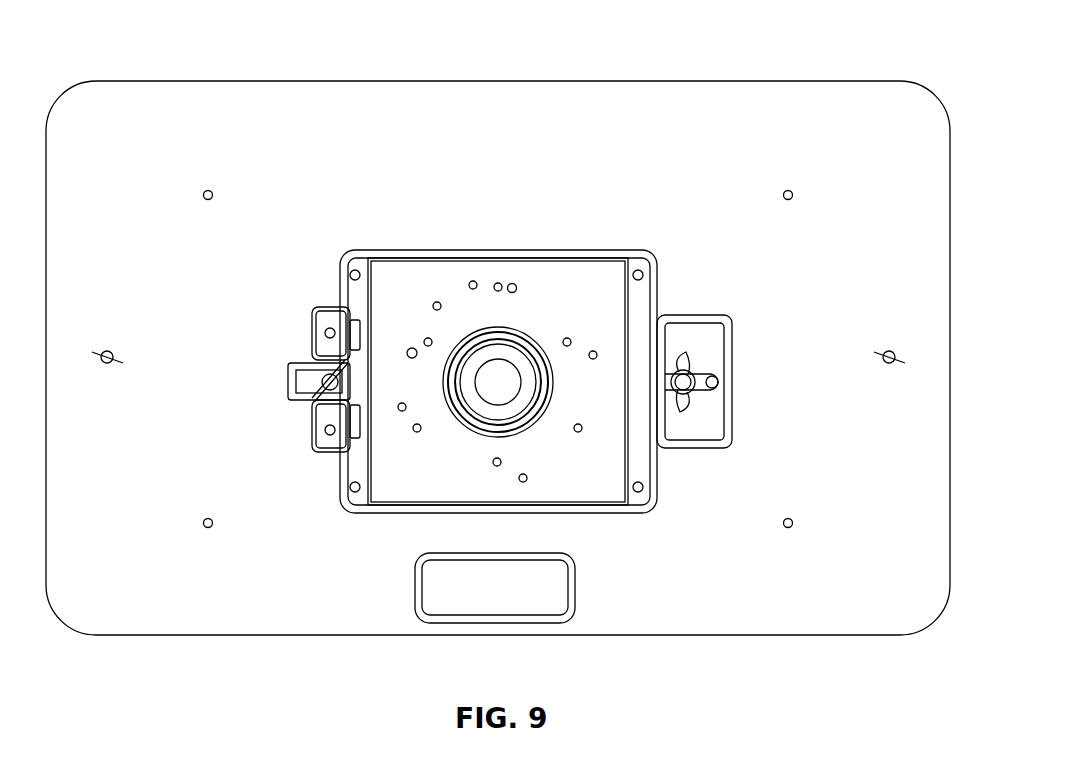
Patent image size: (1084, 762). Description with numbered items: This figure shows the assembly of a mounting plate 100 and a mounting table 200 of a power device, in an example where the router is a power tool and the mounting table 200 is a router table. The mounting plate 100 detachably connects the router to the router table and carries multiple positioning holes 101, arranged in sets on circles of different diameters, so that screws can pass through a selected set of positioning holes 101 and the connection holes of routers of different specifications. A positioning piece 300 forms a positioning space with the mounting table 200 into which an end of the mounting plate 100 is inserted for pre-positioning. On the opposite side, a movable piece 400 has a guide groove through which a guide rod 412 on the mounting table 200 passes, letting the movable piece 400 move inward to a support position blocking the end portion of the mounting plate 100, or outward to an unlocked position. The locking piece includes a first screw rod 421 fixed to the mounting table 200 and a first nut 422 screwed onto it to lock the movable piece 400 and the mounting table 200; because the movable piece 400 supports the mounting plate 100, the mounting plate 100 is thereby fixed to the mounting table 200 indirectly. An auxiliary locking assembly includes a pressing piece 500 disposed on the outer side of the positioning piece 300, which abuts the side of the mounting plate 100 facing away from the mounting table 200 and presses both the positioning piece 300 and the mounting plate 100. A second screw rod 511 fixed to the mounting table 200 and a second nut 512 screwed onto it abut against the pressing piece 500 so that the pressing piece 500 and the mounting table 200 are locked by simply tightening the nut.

The mounting table 200 is at (503, 317).
The mounting plate 100 is at (519, 330).
The positioning hole 101 is at (445, 219).
The positioning piece 300 is at (281, 316).
The pressing piece 500 is at (276, 399).
The second screw rod 511 is at (276, 363).
The second nut 512 is at (296, 440).
The movable piece 400 is at (729, 348).
The first screw rod 421 is at (736, 351).
The guide rod 412 is at (735, 394).
The first nut 422 is at (739, 409).